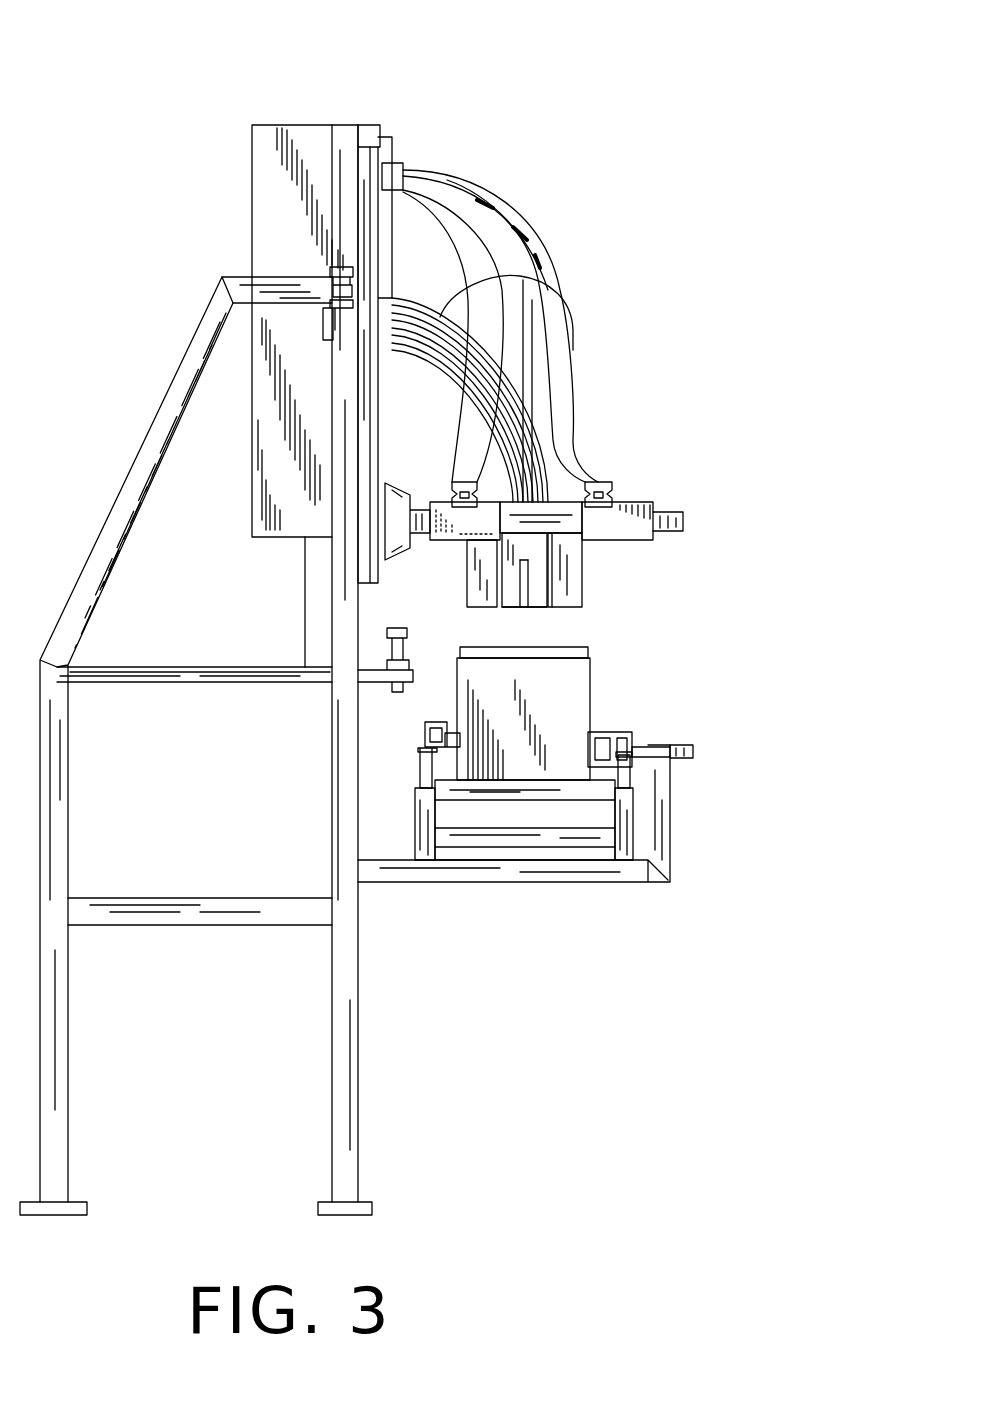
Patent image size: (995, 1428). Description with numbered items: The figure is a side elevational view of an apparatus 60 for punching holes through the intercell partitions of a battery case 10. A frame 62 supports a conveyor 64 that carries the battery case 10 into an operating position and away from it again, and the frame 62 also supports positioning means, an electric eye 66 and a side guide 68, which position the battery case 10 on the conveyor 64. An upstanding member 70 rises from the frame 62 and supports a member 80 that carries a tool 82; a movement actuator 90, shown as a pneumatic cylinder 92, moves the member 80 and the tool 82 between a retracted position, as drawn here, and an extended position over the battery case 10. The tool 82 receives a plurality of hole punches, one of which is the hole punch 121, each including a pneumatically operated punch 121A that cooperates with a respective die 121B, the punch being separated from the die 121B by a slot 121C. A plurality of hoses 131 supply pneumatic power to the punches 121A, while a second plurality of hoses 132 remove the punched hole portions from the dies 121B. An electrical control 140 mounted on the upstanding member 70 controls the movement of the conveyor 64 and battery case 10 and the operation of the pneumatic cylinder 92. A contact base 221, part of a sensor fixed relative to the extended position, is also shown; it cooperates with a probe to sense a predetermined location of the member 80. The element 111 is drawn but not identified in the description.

The battery case 10 is at (573, 705).
The apparatus 60 is at (558, 105).
The frame 62 is at (357, 1026).
The conveyor 64 is at (588, 783).
The electric eye 66 is at (420, 750).
The side guide 68 is at (627, 755).
The upstanding member 70 is at (330, 727).
The member 80 is at (240, 100).
The tool 82 is at (575, 505).
The movement actuator 90 is at (255, 636).
The pneumatic cylinder 92 is at (318, 578).
The valve 111 is at (690, 520).
The hole punch 121 is at (582, 542).
The pneumatically operated punch 121A is at (540, 577).
The die 121B is at (545, 612).
The slot 121C is at (512, 602).
The hoses 131 is at (440, 317).
The hoses 132 is at (535, 215).
The electrical control 140 is at (272, 185).
The contact base 221 is at (537, 610).